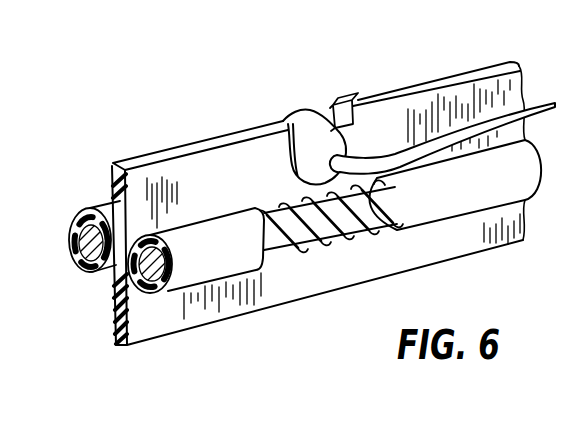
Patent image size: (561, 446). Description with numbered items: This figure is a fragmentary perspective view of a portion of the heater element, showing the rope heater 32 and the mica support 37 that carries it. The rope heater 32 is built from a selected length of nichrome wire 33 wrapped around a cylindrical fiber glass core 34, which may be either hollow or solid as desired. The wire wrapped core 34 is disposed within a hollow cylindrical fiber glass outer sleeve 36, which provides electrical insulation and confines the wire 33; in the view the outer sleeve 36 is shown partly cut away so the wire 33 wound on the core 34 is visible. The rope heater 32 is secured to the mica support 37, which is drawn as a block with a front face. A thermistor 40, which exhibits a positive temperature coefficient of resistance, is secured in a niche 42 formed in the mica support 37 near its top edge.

The rope heater 32 is at (223, 226).
The nichrome wire 33 is at (335, 228).
The cylindrical fiber glass core 34 is at (277, 242).
The hollow cylindrical fiber glass outer sleeve 36 is at (403, 196).
The mica support 37 is at (172, 176).
The thermistor 40 is at (295, 115).
The niche 42 is at (347, 106).